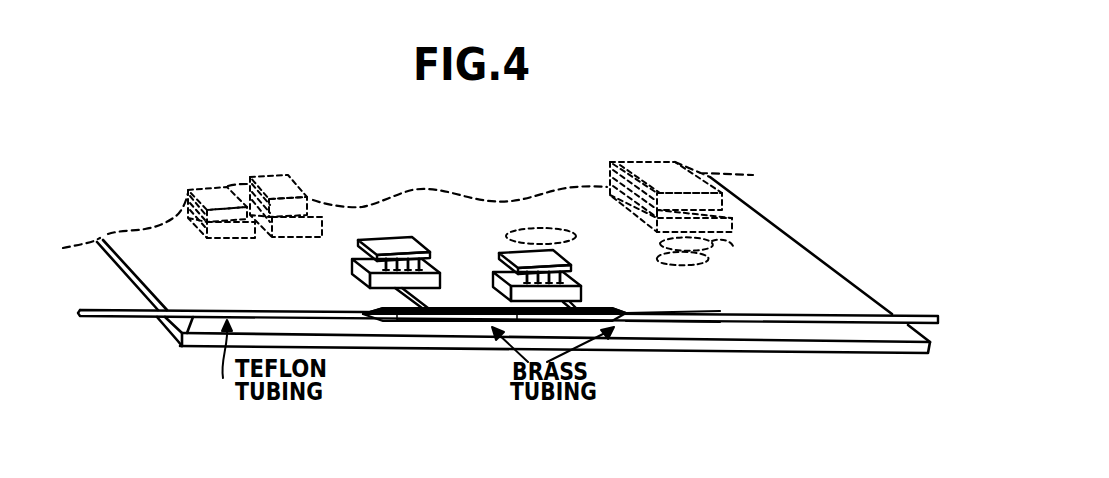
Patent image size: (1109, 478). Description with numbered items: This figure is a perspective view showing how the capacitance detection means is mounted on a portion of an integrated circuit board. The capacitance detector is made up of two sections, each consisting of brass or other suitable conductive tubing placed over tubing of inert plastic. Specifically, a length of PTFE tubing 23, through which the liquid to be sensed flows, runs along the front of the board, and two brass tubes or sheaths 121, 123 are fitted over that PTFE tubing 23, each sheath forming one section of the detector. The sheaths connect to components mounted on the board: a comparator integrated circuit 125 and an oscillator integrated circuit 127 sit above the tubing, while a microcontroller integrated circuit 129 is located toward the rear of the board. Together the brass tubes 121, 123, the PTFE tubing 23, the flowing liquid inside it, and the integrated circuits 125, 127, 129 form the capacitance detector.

The PTFE tubing 23 is at (180, 338).
The brass tube 121 is at (440, 327).
The brass tube 123 is at (665, 326).
The comparator integrated circuit 125 is at (357, 250).
The oscillator integrated circuit 127 is at (577, 259).
The microcontroller integrated circuit 129 is at (675, 160).